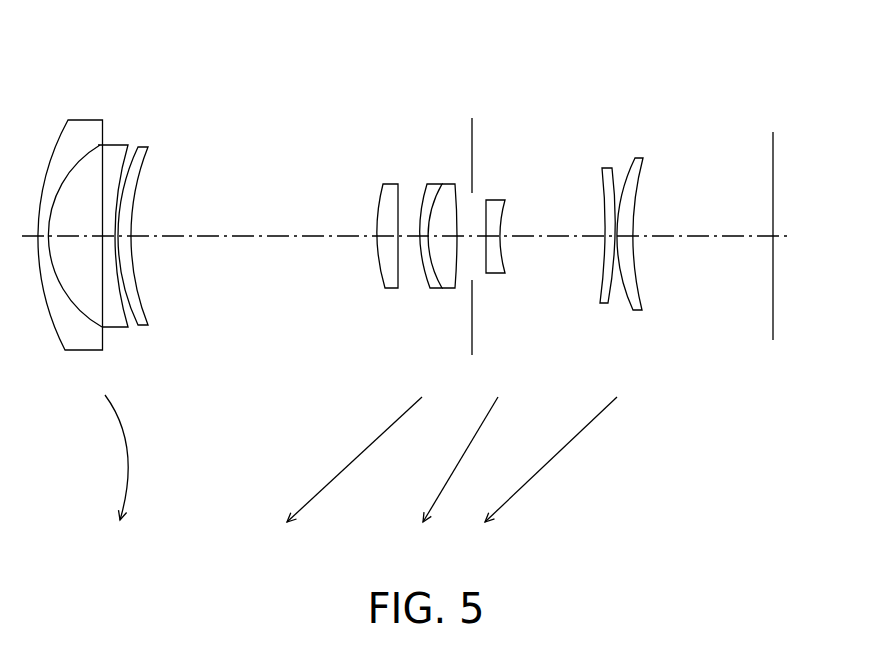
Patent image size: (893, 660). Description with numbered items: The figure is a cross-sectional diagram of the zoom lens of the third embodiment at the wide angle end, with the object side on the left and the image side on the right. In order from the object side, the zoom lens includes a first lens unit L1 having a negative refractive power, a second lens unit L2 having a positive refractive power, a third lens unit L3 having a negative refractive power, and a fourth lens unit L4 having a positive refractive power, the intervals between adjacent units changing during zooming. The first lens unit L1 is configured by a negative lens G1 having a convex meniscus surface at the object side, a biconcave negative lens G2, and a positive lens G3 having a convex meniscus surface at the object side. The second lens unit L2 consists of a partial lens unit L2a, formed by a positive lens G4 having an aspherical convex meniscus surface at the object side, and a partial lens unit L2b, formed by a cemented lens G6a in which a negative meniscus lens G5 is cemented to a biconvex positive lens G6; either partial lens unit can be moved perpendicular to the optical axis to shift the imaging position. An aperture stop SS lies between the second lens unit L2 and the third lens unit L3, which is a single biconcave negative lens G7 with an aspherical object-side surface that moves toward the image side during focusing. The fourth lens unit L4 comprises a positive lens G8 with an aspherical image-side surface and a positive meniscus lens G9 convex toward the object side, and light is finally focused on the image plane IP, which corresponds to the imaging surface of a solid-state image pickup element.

The first lens unit L1 is at (33, 65).
The second lens unit L2 is at (373, 65).
The partial lens unit L2a is at (364, 102).
The partial lens unit L2b is at (405, 102).
The third lens unit L3 is at (510, 65).
The fourth lens unit L4 is at (642, 65).
The negative lens G1 is at (77, 132).
The negative lens G2 is at (117, 145).
The positive lens G3 is at (140, 147).
The positive lens G4 is at (388, 187).
The negative lens G5 is at (430, 187).
The positive lens G6 is at (448, 187).
The cemented lens G6a is at (408, 126).
The negative lens G7 is at (497, 203).
The positive lens G8 is at (605, 168).
The positive lens G9 is at (635, 167).
The aperture stop SS is at (473, 157).
The image plane IP is at (773, 208).